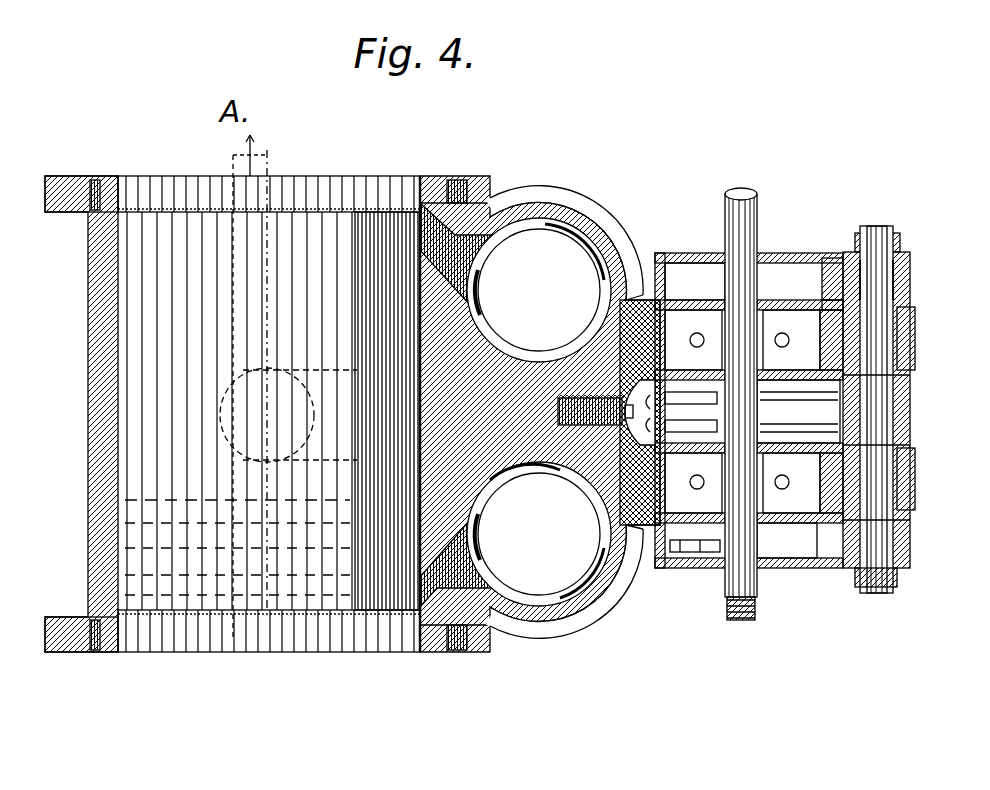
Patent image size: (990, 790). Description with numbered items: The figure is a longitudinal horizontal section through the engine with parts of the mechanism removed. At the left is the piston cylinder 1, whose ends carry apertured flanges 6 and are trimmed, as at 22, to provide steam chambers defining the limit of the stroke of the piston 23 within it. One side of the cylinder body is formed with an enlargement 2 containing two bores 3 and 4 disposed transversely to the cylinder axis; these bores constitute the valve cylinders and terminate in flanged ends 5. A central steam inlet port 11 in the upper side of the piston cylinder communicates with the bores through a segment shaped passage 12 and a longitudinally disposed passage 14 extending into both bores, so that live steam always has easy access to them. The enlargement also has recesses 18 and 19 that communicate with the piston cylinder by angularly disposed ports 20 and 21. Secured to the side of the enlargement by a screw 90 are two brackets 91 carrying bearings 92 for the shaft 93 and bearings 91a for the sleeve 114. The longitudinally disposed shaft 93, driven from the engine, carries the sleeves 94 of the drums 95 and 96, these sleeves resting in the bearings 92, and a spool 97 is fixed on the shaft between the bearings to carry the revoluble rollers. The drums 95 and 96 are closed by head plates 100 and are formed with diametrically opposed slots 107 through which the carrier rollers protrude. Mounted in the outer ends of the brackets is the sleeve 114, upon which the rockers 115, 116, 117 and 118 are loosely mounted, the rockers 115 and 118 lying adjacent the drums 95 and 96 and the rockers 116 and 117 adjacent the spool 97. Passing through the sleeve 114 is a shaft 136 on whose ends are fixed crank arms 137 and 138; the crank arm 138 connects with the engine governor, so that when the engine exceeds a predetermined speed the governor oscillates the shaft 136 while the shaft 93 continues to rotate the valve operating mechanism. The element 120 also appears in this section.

The piston cylinder 1 is at (94, 412).
The enlargement 2 is at (367, 468).
The bore 3 is at (539, 290).
The bore 4 is at (539, 534).
The flanged end 5 is at (590, 206).
The apertured flange 6 is at (92, 178).
The steam inlet port 11 is at (258, 405).
The segment shaped passage 12 is at (326, 390).
The longitudinally disposed passage 14 is at (539, 531).
The recess 18 is at (478, 292).
The recess 19 is at (470, 527).
The angularly disposed port 20 is at (425, 222).
The angularly disposed port 21 is at (237, 559).
The trimmed end 22 is at (168, 194).
The piston 23 is at (234, 640).
The screw 90 is at (573, 395).
The bracket 91 is at (820, 338).
The bearing 91a is at (914, 360).
The bearing 92 is at (697, 348).
The shaft 93 is at (758, 200).
The sleeve 94 is at (720, 325).
The drum 95 is at (695, 281).
The drum 96 is at (787, 540).
The spool 97 is at (762, 412).
The head plate 100 is at (681, 252).
The slot 107 is at (832, 252).
The sleeve 114 is at (896, 291).
The rocker 115 is at (912, 537).
The rocker 116 is at (912, 438).
The rocker 117 is at (912, 392).
The rocker 118 is at (912, 282).
The valve 120 is at (806, 241).
The shaft 136 is at (886, 234).
The crank arm 137 is at (898, 578).
The crank arm 138 is at (824, 264).